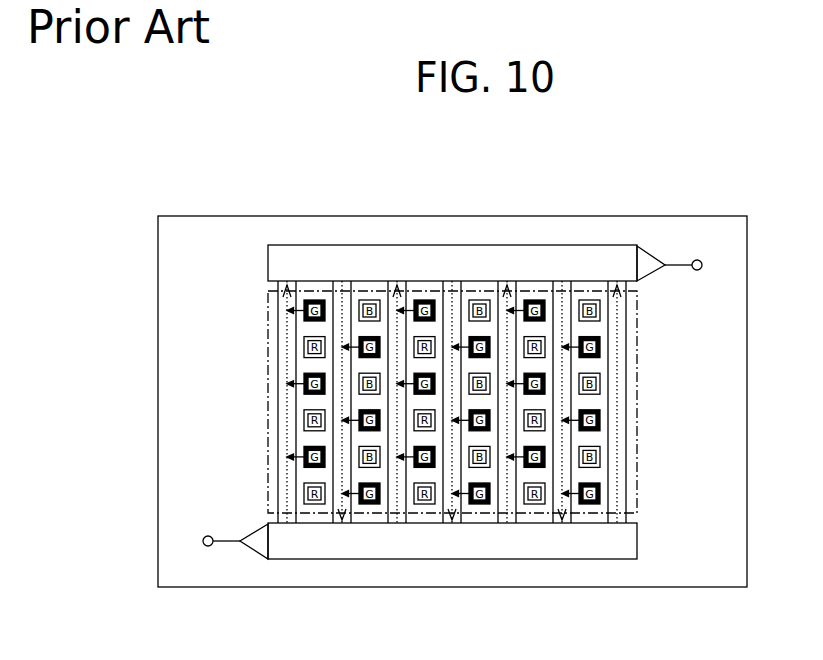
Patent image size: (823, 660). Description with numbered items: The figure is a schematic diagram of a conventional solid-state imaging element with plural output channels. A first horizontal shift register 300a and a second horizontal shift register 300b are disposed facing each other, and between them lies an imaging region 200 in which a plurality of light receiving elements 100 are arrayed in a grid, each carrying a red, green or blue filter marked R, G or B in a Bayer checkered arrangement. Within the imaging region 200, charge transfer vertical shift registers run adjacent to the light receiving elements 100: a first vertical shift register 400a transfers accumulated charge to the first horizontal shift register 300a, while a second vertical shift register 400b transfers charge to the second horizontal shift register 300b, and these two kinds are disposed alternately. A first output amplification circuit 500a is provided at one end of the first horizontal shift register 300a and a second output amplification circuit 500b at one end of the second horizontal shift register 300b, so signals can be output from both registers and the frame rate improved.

The light receiving element 100 is at (600, 347).
The imaging region 200 is at (268, 342).
The first horizontal shift register 300a is at (390, 244).
The second horizontal shift register 300b is at (453, 559).
The first vertical shift register 400a is at (278, 323).
The second vertical shift register 400b is at (330, 300).
The first output amplification circuit 500a is at (643, 260).
The second output amplification circuit 500b is at (260, 547).